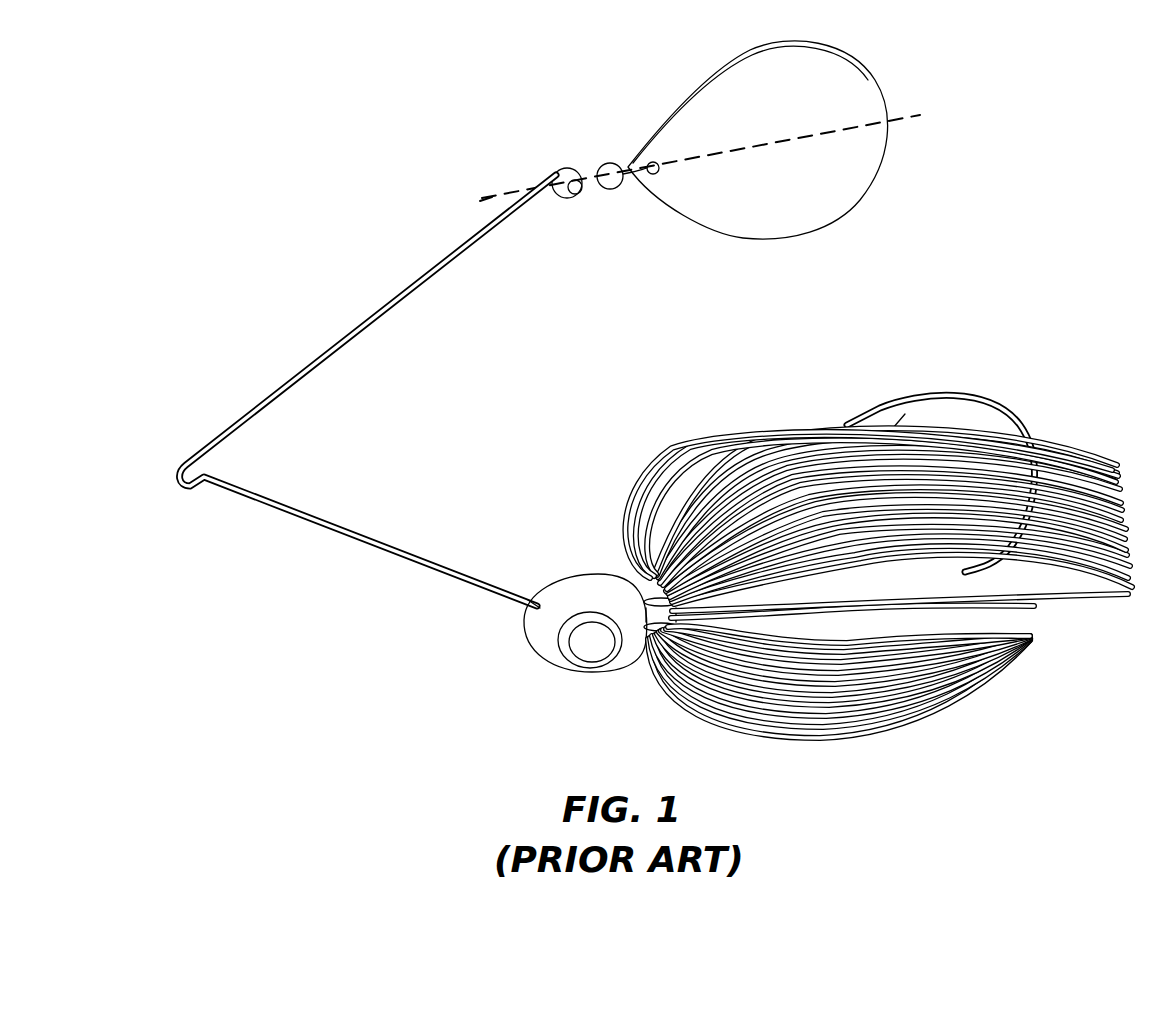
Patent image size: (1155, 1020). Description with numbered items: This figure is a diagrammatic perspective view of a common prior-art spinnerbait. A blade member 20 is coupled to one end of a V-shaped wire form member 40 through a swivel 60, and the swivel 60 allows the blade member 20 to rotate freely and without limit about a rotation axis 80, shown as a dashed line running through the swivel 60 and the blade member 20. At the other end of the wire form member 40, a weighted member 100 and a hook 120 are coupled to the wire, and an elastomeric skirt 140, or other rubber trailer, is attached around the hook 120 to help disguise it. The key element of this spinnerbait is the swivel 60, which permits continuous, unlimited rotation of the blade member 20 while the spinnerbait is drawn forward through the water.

The blade member 20 is at (757, 218).
The V-shaped wire form member 40 is at (423, 281).
The swivel 60 is at (613, 184).
The rotation axis 80 is at (484, 196).
The weighted member 100 is at (572, 603).
The hook 120 is at (917, 397).
The elastomeric skirt 140 is at (678, 467).